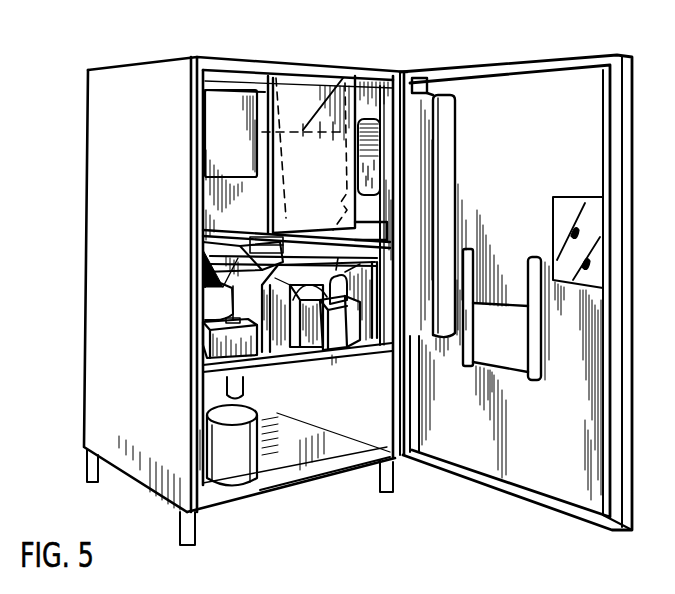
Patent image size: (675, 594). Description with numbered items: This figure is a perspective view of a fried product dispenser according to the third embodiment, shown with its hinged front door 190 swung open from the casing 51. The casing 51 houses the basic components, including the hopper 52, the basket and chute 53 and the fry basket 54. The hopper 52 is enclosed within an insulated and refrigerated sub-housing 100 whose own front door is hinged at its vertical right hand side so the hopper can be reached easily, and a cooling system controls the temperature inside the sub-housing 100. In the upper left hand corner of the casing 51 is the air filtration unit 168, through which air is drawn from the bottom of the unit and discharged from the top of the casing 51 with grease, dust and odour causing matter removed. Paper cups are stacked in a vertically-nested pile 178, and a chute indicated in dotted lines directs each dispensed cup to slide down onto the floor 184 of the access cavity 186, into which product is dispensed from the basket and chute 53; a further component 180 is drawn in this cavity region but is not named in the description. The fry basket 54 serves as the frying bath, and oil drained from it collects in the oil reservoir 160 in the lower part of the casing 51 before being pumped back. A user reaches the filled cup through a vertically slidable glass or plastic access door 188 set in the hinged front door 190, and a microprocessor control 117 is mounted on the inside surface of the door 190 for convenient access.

The casing 51 is at (245, 301).
The hopper 52 is at (343, 78).
The basket and chute 53 is at (197, 258).
The fry basket 54 is at (192, 300).
The sub-housing 100 is at (247, 82).
The microprocessor control 117 is at (425, 130).
The oil reservoir 160 is at (250, 463).
The air filtration unit 168 is at (248, 145).
The vertically-nested pile 178 is at (373, 193).
The brewing mechanism 180 is at (307, 350).
The floor 184 is at (330, 358).
The access cavity 186 is at (332, 350).
The access door 188 is at (517, 355).
The front door 190 is at (547, 462).